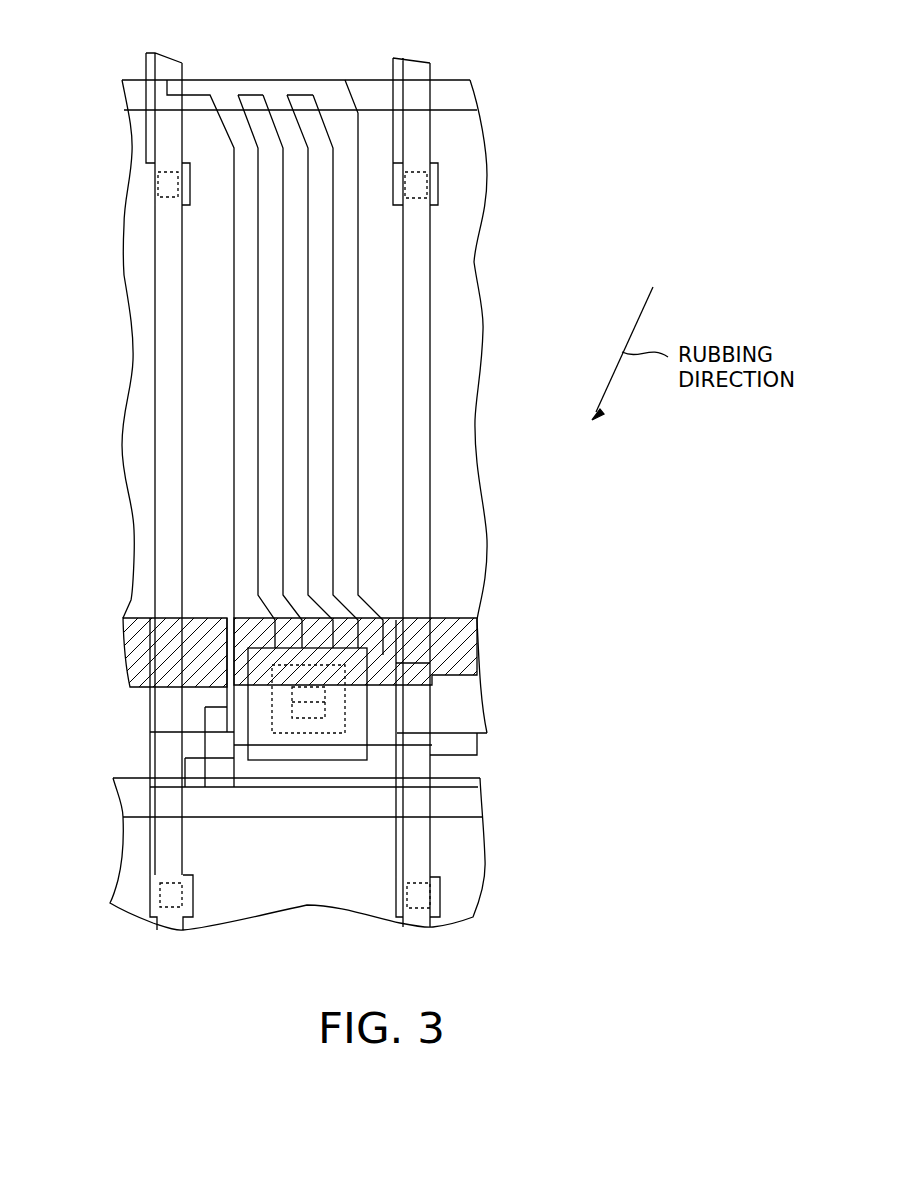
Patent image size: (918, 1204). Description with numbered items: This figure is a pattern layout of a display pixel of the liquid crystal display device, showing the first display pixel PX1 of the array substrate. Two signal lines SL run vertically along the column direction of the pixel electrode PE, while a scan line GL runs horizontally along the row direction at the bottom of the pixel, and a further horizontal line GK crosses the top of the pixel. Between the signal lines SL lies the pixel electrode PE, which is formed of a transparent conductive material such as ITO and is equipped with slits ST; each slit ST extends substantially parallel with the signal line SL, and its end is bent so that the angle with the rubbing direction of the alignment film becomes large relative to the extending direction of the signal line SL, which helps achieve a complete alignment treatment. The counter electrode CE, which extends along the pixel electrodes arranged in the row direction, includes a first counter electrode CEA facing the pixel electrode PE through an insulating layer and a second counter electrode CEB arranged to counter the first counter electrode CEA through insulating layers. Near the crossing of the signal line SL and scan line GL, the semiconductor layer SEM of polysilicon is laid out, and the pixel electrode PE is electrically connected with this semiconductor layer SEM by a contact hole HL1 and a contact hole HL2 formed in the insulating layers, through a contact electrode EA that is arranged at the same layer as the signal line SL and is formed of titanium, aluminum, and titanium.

The first display pixel PX1 is at (521, 152).
The gate line (upper) GK is at (281, 90).
The signal line SL is at (165, 318).
The pixel electrode PE is at (345, 418).
The slit ST is at (272, 500).
The first counter electrode CEA is at (457, 498).
The second counter electrode CEB is at (333, 592).
The counter electrode CE is at (567, 470).
The semiconductor layer SEM is at (265, 688).
The contact electrode EA is at (357, 708).
The contact hole HL1 is at (305, 718).
The contact hole HL2 is at (306, 840).
The scan line GL is at (267, 798).